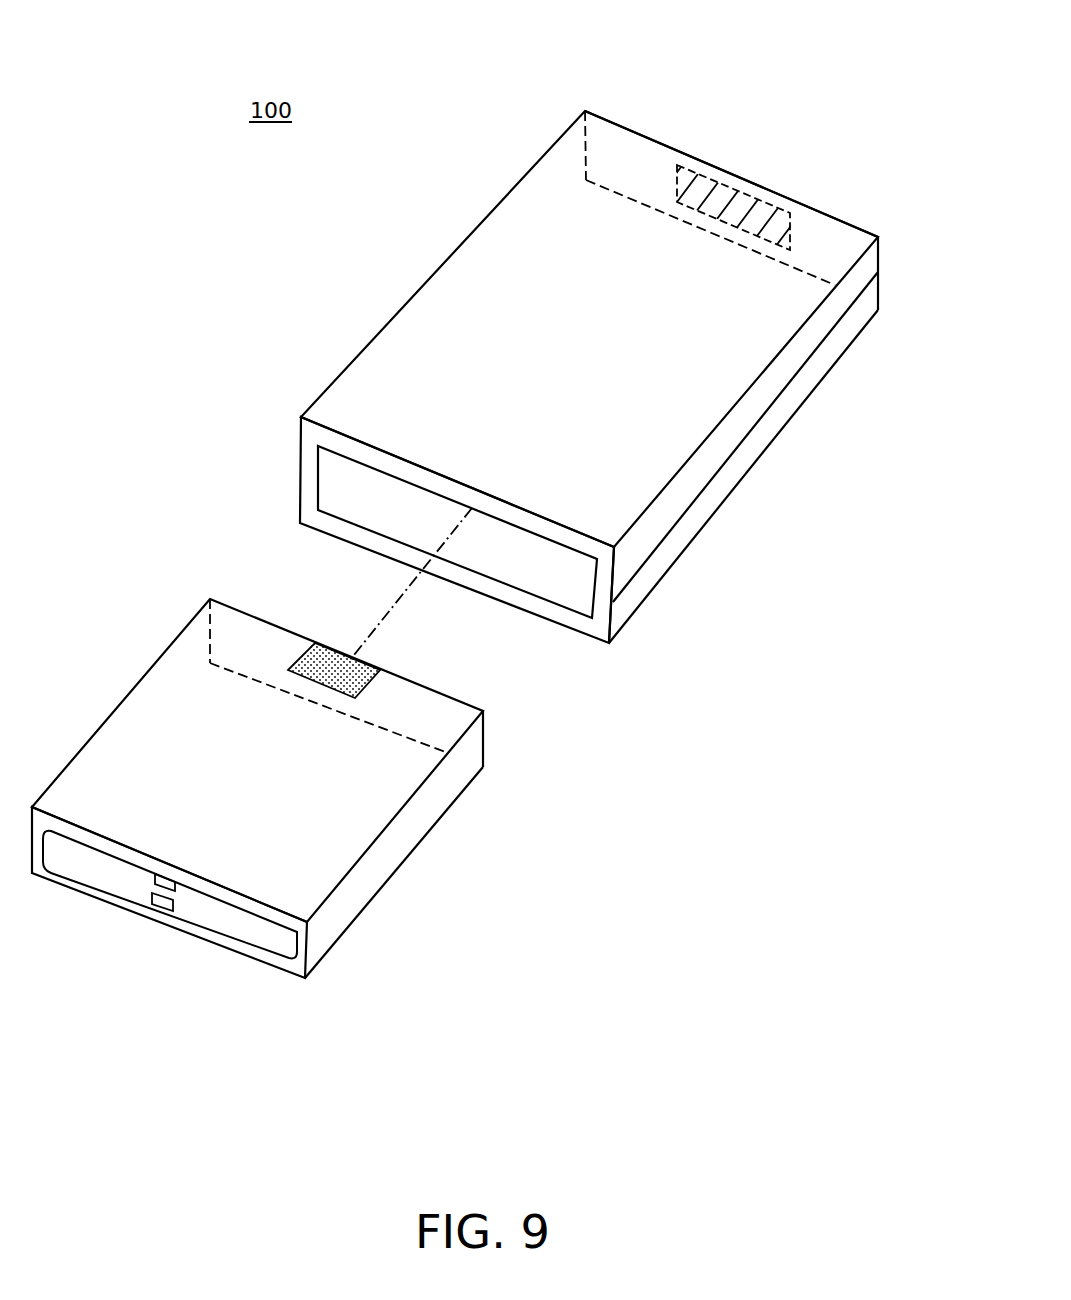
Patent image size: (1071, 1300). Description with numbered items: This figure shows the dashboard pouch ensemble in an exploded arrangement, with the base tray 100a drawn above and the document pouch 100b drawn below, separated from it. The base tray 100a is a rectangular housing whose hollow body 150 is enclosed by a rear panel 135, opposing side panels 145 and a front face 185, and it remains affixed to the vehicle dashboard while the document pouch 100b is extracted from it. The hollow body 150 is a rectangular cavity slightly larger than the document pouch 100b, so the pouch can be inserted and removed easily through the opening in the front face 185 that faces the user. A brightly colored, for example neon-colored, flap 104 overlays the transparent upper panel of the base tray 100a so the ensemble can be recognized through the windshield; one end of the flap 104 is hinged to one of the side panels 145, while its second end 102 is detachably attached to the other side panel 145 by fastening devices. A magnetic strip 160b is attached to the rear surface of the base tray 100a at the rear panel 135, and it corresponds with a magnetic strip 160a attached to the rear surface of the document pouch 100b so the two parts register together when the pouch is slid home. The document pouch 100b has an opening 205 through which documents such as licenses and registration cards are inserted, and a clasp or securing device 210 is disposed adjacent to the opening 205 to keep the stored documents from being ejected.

The base tray 100a is at (554, 328).
The document pouch 100b is at (298, 854).
The second end of the flap 102 is at (823, 318).
The flap 104 is at (462, 288).
The rear panel 135 is at (648, 137).
The side panels 145 is at (645, 584).
The hollow body 150 is at (333, 488).
The magnetic strip 160a is at (728, 205).
The magnetic strip 160b is at (368, 666).
The front face 185 is at (305, 457).
The opening 205 is at (252, 930).
The clasp or securing device 210 is at (163, 902).